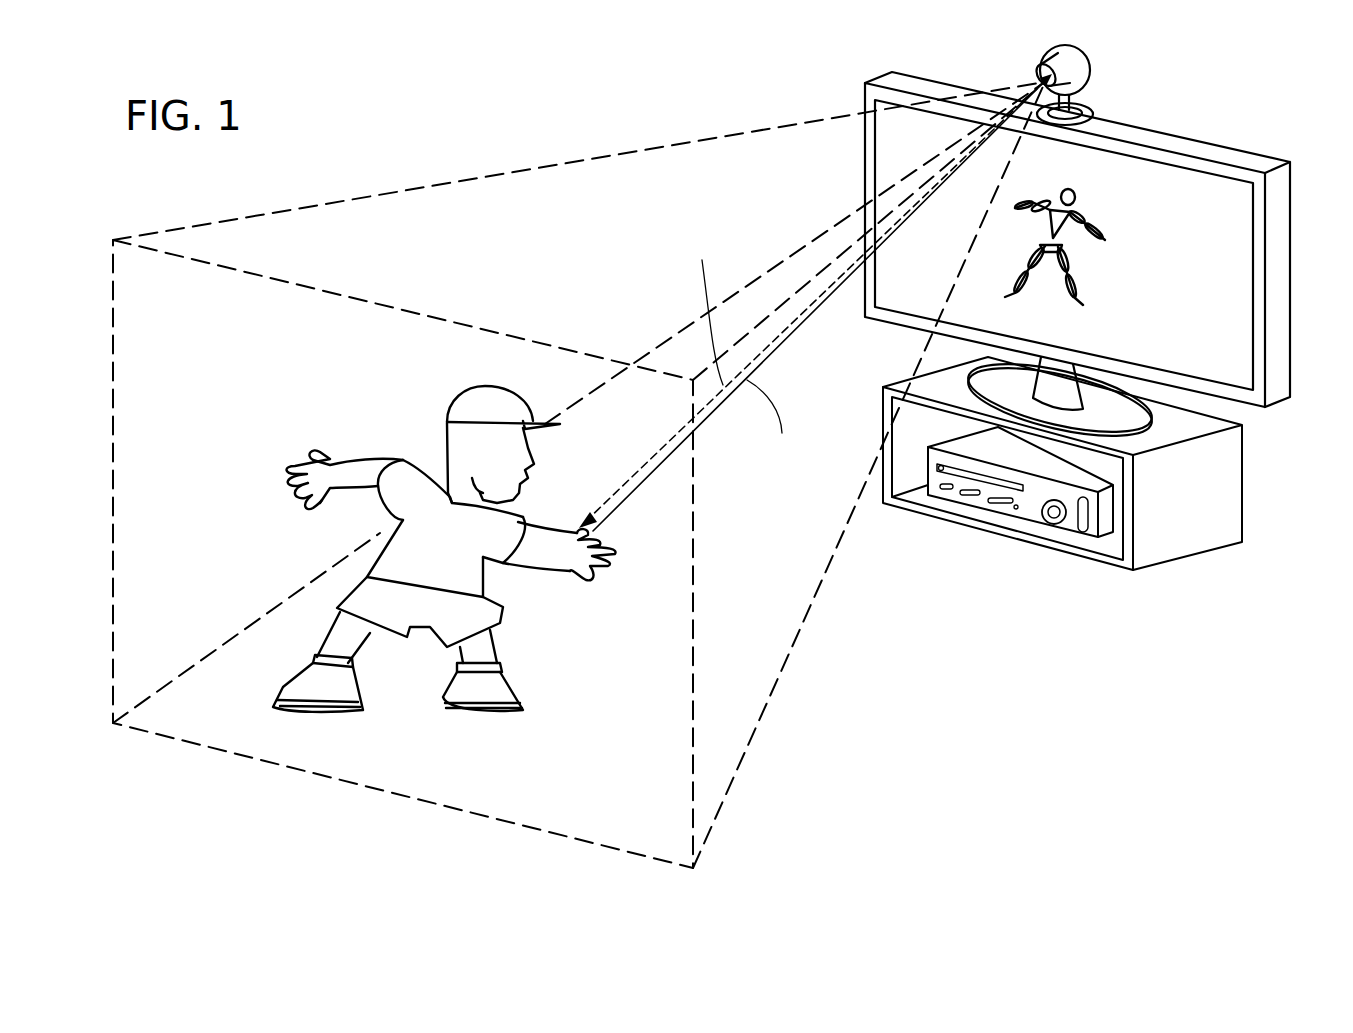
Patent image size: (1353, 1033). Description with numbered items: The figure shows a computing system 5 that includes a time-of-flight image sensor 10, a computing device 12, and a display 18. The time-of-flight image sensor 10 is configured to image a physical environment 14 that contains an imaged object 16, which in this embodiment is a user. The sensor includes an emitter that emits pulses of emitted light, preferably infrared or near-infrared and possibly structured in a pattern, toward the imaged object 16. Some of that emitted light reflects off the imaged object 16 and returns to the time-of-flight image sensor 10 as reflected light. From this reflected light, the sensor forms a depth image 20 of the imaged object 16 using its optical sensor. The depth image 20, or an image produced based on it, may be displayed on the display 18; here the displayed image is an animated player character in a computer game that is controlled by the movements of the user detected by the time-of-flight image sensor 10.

The computing system 5 is at (458, 146).
The time-of-flight image sensor 10 is at (1090, 50).
The computing device 12 is at (1030, 520).
The physical environment 14 is at (198, 340).
The imaged object 16 is at (446, 567).
The display 18 is at (1201, 327).
The depth image 20 is at (1077, 193).